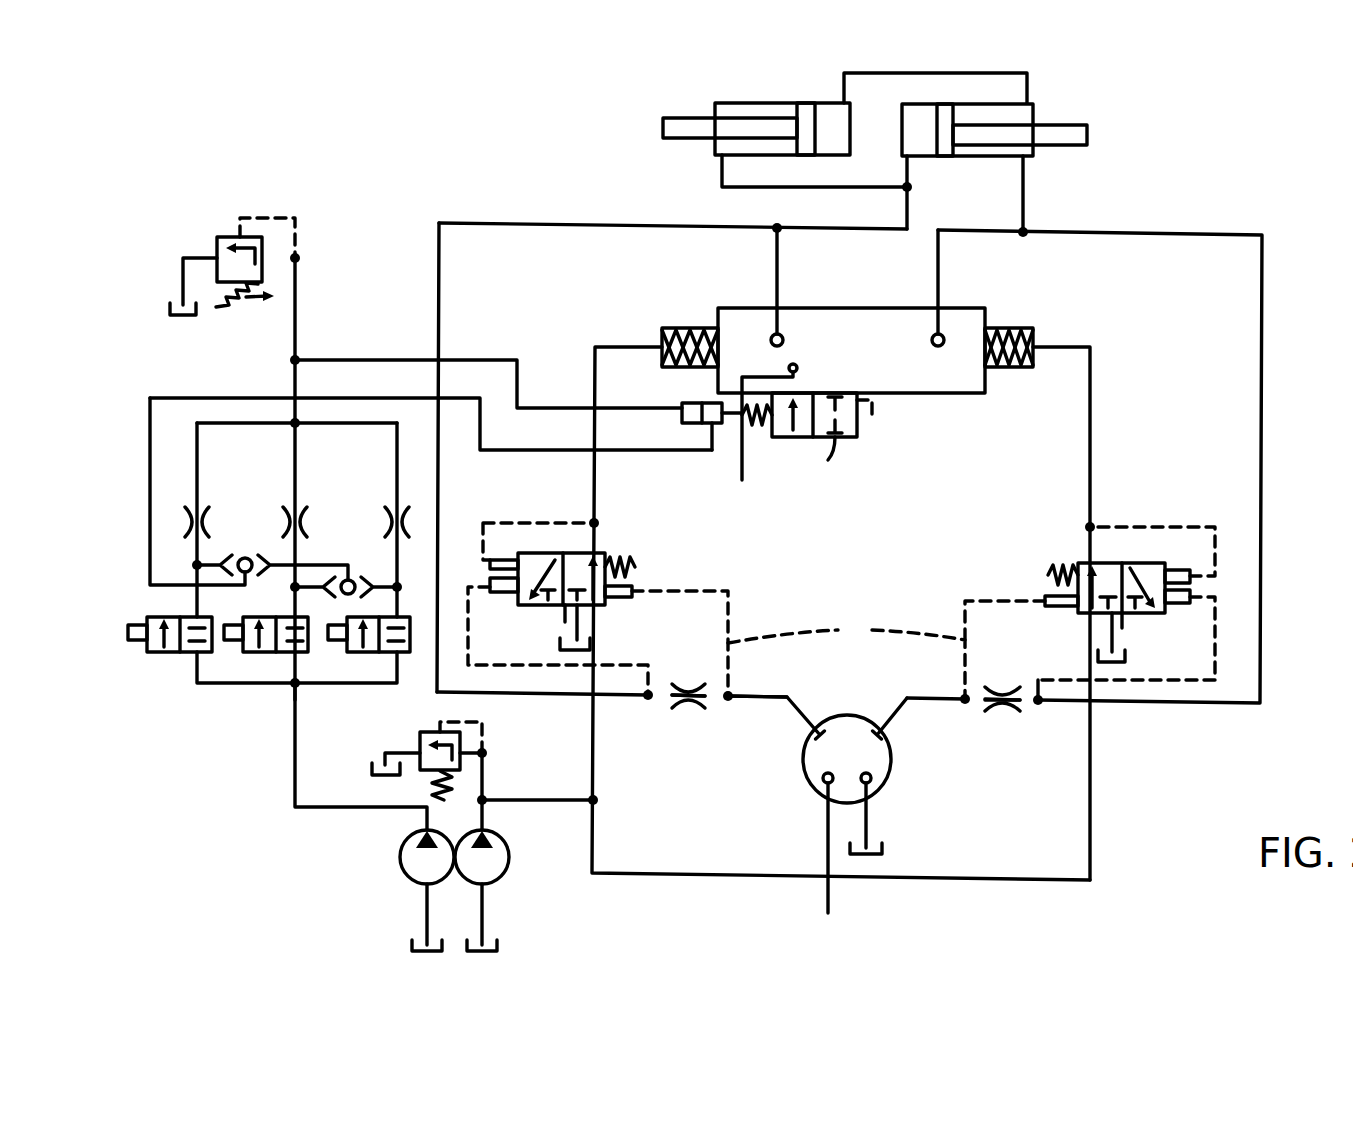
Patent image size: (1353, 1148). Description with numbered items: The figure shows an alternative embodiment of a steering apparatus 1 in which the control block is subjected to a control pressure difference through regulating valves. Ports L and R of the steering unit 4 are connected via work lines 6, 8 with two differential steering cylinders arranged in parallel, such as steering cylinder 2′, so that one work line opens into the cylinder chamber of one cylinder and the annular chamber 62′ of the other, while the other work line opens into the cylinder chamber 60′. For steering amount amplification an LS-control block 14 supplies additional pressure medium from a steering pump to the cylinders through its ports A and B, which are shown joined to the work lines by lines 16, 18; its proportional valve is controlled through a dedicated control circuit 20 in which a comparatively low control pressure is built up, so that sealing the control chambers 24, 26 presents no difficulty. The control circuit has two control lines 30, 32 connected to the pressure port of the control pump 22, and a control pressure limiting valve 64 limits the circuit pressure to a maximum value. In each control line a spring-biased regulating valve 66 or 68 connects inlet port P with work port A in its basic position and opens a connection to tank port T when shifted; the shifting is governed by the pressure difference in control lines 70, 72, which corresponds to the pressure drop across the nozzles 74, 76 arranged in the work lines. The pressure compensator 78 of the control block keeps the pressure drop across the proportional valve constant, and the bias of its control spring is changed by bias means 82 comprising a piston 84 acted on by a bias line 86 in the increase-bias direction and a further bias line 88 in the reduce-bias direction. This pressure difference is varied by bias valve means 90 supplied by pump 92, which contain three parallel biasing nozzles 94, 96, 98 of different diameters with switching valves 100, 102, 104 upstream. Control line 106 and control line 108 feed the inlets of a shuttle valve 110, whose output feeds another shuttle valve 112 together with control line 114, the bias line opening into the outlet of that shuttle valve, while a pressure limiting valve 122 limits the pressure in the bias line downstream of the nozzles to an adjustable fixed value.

The steering apparatus 1 is at (1286, 234).
The steering cylinder 2′ is at (766, 98).
The steering unit 4 is at (875, 755).
The work line 6 is at (445, 280).
The work line 8 is at (1262, 342).
The LS-control block 14 is at (835, 364).
The working line A 16 is at (783, 271).
The working line B 18 is at (945, 273).
The control circuit 20 is at (1105, 433).
The control pump 22 is at (498, 868).
The control chamber 24 is at (683, 328).
The control chamber 26 is at (1000, 372).
The control line 30 is at (590, 748).
The control line 32 is at (1092, 758).
The cylinder chamber 60′ is at (836, 120).
The annular chamber 62′ is at (726, 107).
The control pressure limiting valve 64 is at (420, 749).
The regulating valve 66 is at (652, 571).
The regulating valve 68 is at (1032, 570).
The control line 70 is at (662, 669).
The control line 72 is at (846, 657).
The nozzle 74 is at (690, 712).
The nozzle 76 is at (1003, 715).
The pressure compensator 78 is at (858, 425).
The bias means 82 is at (678, 386).
The piston 84 is at (690, 425).
The bias line 86 is at (368, 355).
The bias line 88 is at (500, 450).
The bias valve means 90 is at (153, 361).
The pump 92 is at (398, 872).
The biasing nozzle 94 is at (406, 522).
The biasing nozzle 96 is at (307, 522).
The biasing nozzle 98 is at (208, 522).
The switching valve 100 is at (382, 655).
The switching valve 102 is at (247, 655).
The switching valve 104 is at (152, 672).
The control line 106 is at (398, 561).
The control line 108 is at (300, 668).
The shuttle valve 110 is at (372, 572).
The shuttle valve 112 is at (220, 578).
The control line 114 is at (197, 486).
The pressure limiting valve 122 is at (220, 253).